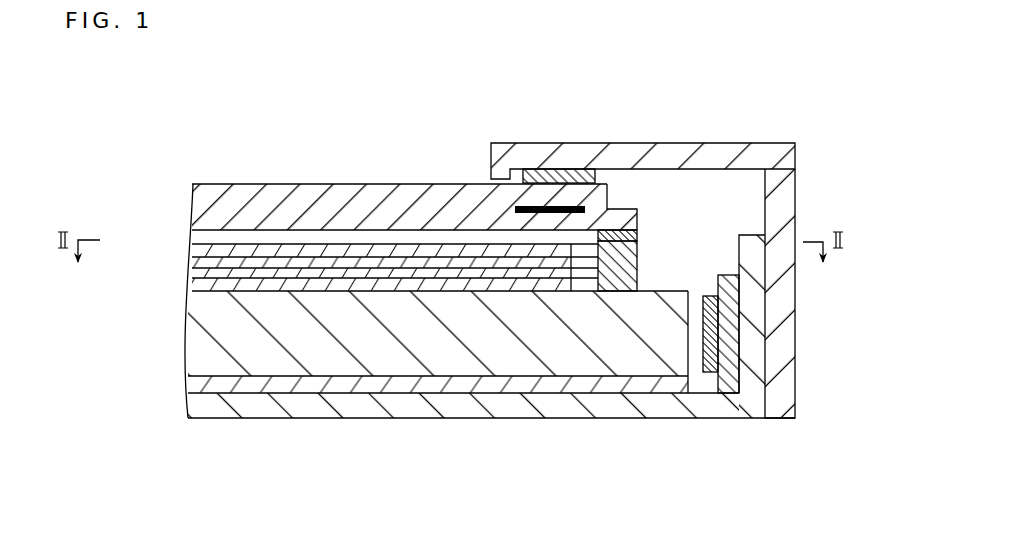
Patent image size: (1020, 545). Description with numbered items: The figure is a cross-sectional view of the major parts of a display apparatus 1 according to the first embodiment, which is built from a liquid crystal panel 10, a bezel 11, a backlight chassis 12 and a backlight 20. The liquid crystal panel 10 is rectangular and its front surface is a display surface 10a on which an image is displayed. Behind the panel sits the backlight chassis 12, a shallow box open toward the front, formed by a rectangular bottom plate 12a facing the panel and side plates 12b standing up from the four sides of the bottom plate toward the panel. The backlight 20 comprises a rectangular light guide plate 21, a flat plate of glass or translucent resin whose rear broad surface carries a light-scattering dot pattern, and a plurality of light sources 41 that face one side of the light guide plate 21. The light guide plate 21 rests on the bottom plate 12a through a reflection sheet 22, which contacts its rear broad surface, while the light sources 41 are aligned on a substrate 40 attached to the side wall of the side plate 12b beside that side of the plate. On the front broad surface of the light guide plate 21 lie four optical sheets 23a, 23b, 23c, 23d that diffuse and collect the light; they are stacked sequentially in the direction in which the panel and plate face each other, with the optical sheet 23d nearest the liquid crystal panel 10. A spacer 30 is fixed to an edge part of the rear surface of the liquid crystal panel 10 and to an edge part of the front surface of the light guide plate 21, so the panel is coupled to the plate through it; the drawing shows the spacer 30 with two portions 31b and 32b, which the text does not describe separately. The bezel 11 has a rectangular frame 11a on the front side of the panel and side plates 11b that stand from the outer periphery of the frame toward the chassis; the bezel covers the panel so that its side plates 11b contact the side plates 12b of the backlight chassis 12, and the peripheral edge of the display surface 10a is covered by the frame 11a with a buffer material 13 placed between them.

The display apparatus 1 is at (206, 87).
The liquid crystal panel 10 is at (379, 173).
The display surface 10a is at (314, 184).
The bezel 11 is at (678, 254).
The frame 11a is at (623, 148).
The side plates 11b is at (790, 327).
The backlight chassis 12 is at (525, 372).
The bottom plate 12a is at (322, 410).
The side plates 12b is at (757, 362).
The buffer material 13 is at (598, 174).
The backlight 20 is at (398, 298).
The light guide plate 21 is at (198, 337).
The reflection sheet 22 is at (198, 387).
The optical sheet 23a is at (205, 285).
The optical sheet 23b is at (205, 275).
The optical sheet 23c is at (200, 263).
The optical sheet 23d is at (198, 249).
The spacer 30 is at (667, 242).
The first seal portion 31b is at (630, 279).
The second seal portion 32b is at (640, 236).
The substrate 40 is at (727, 384).
The light sources 41 is at (712, 373).